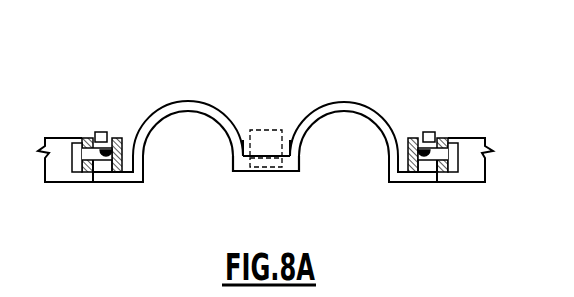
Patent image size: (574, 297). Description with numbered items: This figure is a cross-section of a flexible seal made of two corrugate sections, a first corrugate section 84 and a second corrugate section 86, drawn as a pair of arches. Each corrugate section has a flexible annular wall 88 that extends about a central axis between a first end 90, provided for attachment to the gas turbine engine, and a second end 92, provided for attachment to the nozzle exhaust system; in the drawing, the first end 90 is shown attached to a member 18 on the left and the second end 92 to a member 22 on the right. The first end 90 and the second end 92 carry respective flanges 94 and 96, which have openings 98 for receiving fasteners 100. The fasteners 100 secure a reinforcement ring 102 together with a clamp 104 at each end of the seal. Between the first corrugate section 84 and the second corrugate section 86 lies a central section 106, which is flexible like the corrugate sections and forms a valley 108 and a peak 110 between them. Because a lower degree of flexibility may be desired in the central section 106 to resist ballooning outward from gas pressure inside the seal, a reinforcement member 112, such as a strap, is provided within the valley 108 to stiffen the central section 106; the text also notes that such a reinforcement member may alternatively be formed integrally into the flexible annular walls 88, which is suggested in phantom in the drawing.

The first panel 18 is at (58, 137).
The second panel 22 is at (461, 138).
The first corrugate section 84 is at (203, 101).
The second corrugate section 86 is at (345, 101).
The flexible annular wall 88 is at (218, 112).
The first end 90 is at (265, 147).
The second end 92 is at (444, 120).
The flange 94 is at (100, 132).
The flange 96 is at (429, 131).
The opening 98 is at (115, 138).
The fastener 100 is at (71, 160).
The reinforcement ring 102 is at (124, 156).
The clamp 104 is at (87, 173).
The central section 106 is at (272, 193).
The valley 108 is at (283, 108).
The peak 110 is at (292, 171).
The reinforcement member 112 is at (283, 135).